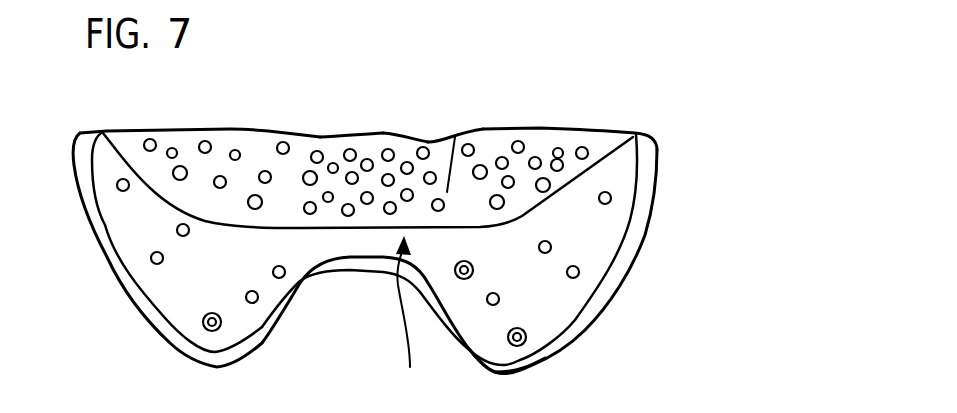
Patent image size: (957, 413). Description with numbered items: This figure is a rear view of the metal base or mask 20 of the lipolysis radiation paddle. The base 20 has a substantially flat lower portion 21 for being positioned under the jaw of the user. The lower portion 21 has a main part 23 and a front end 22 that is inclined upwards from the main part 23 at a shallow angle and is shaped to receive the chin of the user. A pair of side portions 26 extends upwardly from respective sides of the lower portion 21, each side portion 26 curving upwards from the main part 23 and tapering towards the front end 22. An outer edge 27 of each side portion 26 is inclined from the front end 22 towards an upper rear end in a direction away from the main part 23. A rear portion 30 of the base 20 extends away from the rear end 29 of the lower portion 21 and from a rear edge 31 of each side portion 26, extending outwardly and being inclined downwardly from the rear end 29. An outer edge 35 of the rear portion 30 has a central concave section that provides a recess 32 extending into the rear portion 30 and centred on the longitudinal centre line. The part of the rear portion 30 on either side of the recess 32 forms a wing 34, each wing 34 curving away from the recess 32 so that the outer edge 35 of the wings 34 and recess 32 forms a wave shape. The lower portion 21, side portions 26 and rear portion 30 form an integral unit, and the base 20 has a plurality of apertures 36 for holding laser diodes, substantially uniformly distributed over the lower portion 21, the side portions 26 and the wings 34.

The base 20 is at (407, 215).
The lower portion 21 is at (415, 176).
The front end 22 is at (370, 147).
The main part 23 is at (340, 167).
The side portions 26 is at (185, 142).
The outer edge 27 is at (132, 128).
The rear end 29 is at (333, 228).
The rear portion 30 is at (455, 137).
The rear edge 31 is at (128, 166).
The recess 32 is at (362, 288).
The wing 34 is at (168, 287).
The outer edge 35 is at (503, 363).
The apertures 36 is at (236, 153).